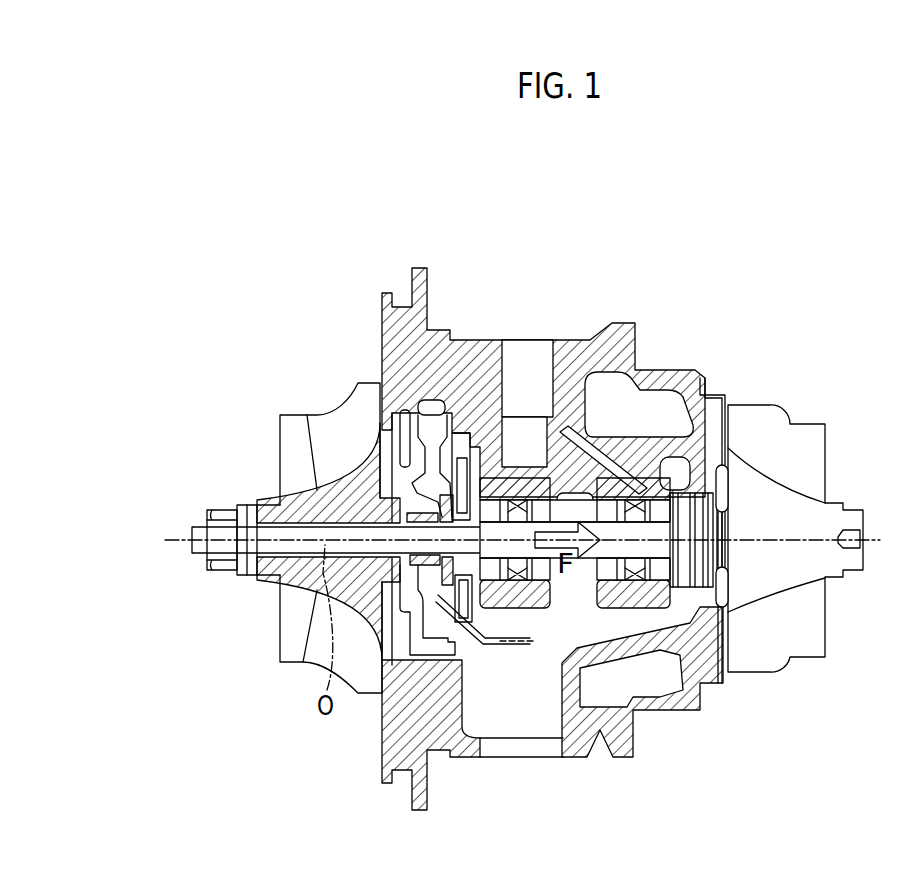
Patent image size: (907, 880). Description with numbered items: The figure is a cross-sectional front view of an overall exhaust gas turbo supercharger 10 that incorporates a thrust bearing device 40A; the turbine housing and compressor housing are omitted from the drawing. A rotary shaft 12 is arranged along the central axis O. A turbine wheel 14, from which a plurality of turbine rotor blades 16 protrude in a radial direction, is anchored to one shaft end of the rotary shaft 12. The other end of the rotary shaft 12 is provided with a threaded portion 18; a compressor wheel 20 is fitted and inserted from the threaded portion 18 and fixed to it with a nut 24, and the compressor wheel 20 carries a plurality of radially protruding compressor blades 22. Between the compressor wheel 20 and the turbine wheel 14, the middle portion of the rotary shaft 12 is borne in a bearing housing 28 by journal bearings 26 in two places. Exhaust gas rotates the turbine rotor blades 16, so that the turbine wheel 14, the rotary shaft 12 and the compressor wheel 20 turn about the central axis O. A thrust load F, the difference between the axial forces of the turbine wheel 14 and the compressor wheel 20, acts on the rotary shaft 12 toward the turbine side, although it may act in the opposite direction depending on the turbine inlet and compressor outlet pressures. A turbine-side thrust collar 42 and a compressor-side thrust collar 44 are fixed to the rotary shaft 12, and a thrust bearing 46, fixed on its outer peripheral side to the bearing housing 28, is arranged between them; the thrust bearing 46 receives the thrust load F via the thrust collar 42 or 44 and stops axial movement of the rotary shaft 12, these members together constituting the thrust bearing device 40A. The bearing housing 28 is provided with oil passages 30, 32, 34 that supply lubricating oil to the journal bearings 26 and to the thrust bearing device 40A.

The exhaust gas turbo supercharger 10 is at (665, 236).
The rotary shaft 12 is at (597, 550).
The turbine wheel 14 is at (843, 503).
The turbine rotor blades 16 is at (780, 453).
The threaded portion 18 is at (207, 523).
The compressor wheel 20 is at (268, 568).
The compressor blades 22 is at (333, 435).
The nut 24 is at (220, 567).
The journal bearings 26 is at (513, 600).
The bearing housing 28 is at (490, 447).
The oil passage 30 is at (503, 390).
The oil passage 32 is at (588, 432).
The oil passage 34 is at (477, 437).
The thrust bearing device 40A is at (400, 492).
The oil passage 42 is at (520, 483).
The oil deflector 44 is at (427, 503).
The thrust bearing 46 is at (443, 462).